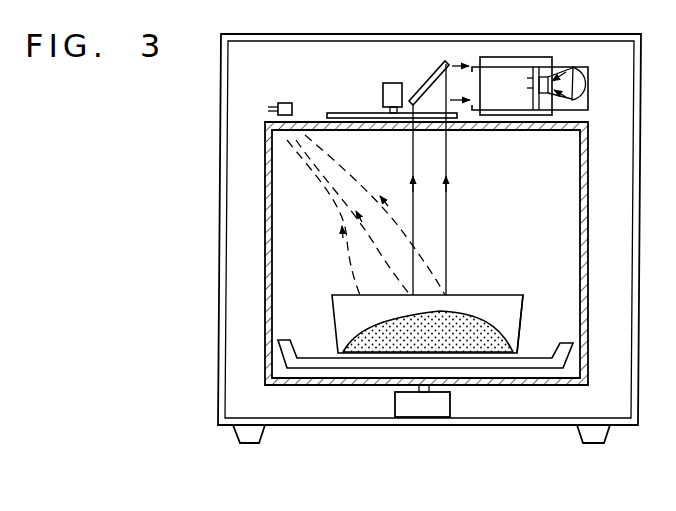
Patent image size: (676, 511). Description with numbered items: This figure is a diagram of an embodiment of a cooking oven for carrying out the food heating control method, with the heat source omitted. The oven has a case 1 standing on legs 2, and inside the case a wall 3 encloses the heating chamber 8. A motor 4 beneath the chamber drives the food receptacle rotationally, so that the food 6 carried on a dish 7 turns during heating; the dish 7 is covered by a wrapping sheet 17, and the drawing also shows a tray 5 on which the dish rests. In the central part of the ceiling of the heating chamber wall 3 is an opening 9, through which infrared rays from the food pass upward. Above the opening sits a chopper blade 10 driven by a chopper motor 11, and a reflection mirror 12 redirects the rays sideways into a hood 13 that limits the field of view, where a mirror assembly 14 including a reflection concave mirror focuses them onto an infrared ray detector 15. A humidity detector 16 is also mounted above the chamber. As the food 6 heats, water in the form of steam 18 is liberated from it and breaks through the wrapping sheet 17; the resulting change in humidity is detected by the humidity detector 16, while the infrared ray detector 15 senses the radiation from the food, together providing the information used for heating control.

The case 1 is at (218, 254).
The legs 2 is at (262, 430).
The wall of heating chamber 3 is at (582, 214).
The motor 4 is at (450, 405).
The tray 5 is at (282, 343).
The food 6 is at (475, 320).
The dish 7 is at (522, 316).
The heating chamber 8 is at (480, 236).
The opening 9 is at (413, 134).
The chopper blade 10 is at (336, 113).
The chopper motor 11 is at (391, 63).
The reflection mirror 12 is at (434, 78).
The hood 13 is at (508, 57).
The mirror assembly 14 is at (588, 66).
The infrared ray detector 15 is at (547, 77).
The humidity detector 16 is at (287, 103).
The wrapping sheet 17 is at (333, 297).
The water in the form of steam 18 is at (332, 186).